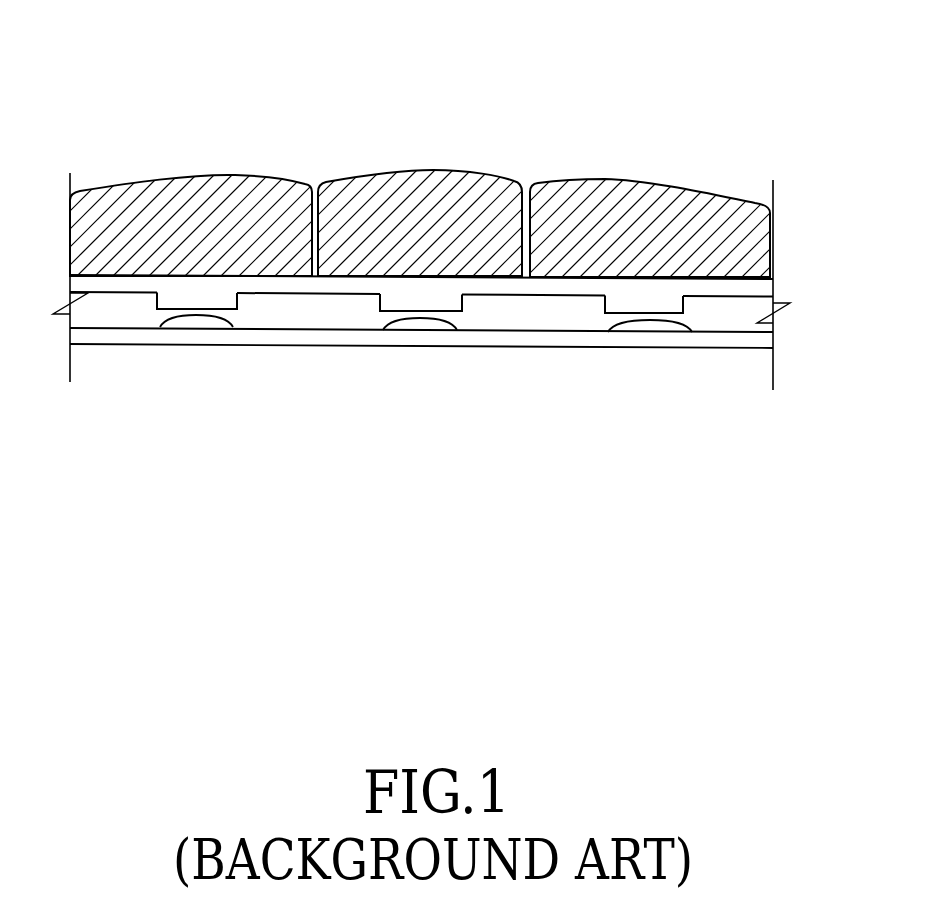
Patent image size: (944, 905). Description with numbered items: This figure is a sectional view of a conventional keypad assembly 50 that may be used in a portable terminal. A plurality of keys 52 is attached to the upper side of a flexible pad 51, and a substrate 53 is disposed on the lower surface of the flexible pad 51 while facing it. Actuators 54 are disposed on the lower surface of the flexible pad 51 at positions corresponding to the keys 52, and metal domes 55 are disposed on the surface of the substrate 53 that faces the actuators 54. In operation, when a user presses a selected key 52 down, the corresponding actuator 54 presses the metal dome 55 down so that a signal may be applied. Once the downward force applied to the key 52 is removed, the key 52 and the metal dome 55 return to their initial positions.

The keypad assembly 50 is at (550, 47).
The flexible pad 51 is at (772, 284).
The keys 52 is at (687, 203).
The substrate 53 is at (763, 341).
The actuators 54 is at (683, 300).
The metal domes 55 is at (690, 322).